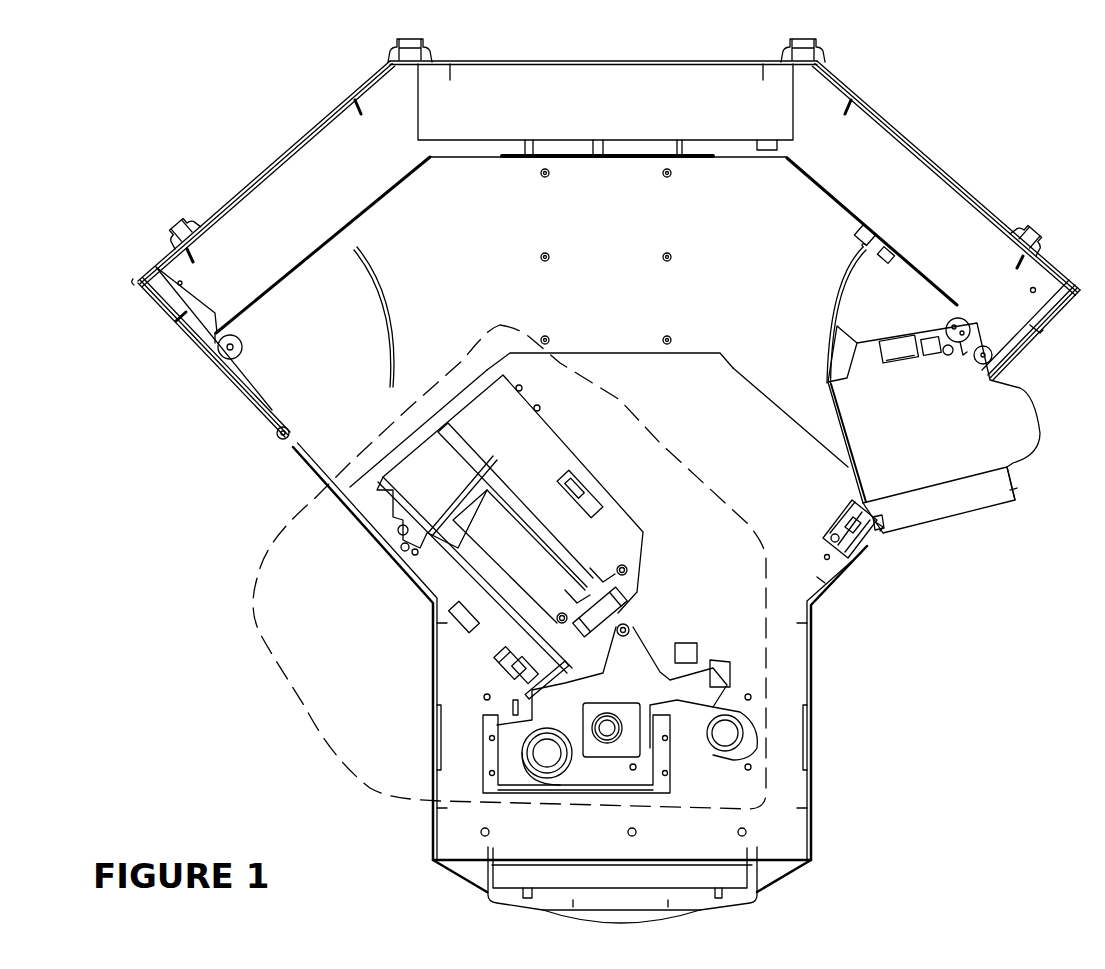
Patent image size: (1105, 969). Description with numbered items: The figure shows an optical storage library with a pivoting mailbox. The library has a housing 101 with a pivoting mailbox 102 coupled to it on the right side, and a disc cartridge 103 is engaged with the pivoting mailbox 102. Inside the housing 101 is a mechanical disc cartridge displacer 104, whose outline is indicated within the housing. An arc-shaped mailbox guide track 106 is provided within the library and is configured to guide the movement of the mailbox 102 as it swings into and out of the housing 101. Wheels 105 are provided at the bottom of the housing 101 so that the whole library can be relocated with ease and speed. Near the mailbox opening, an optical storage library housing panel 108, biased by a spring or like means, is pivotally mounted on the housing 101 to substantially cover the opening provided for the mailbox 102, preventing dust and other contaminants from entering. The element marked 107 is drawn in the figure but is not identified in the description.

The housing 101 is at (887, 121).
The pivoting mailbox 102 is at (982, 423).
The disc cartridge 103 is at (997, 513).
The mechanical disc cartridge displacer 104 is at (262, 633).
The wheels 105 is at (390, 48).
The arc-shaped mailbox guide track 106 is at (847, 287).
The hinge 107 is at (875, 228).
The optical storage library housing panel 108 is at (862, 505).